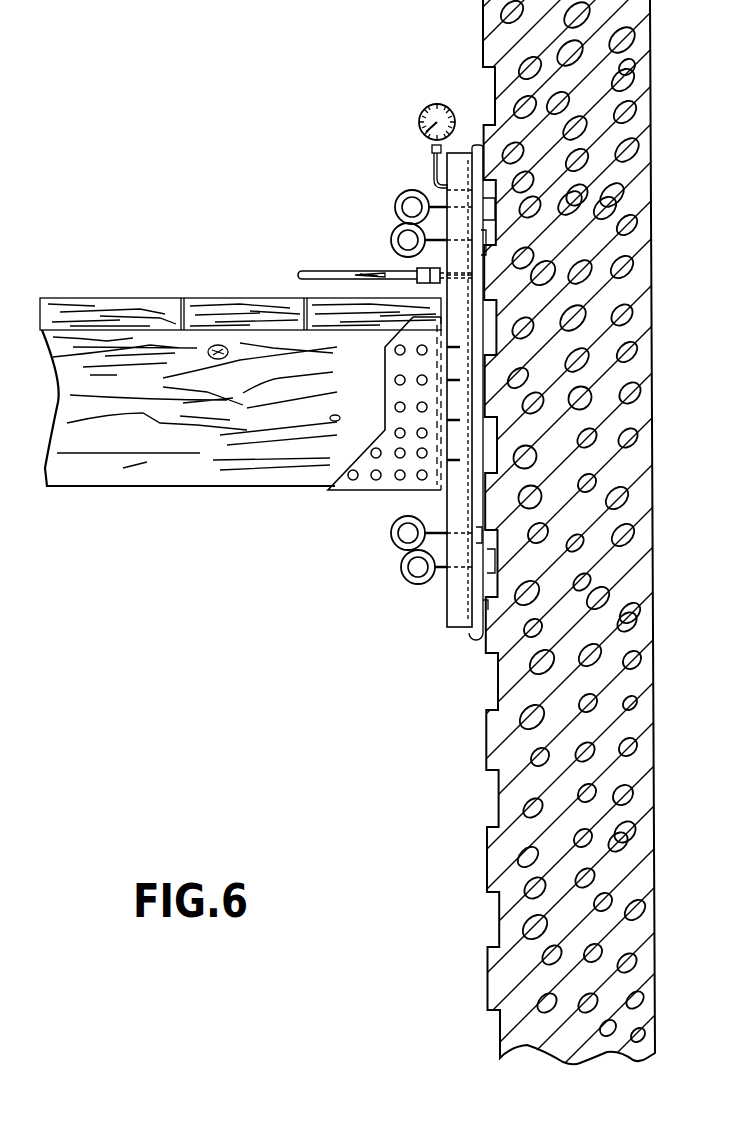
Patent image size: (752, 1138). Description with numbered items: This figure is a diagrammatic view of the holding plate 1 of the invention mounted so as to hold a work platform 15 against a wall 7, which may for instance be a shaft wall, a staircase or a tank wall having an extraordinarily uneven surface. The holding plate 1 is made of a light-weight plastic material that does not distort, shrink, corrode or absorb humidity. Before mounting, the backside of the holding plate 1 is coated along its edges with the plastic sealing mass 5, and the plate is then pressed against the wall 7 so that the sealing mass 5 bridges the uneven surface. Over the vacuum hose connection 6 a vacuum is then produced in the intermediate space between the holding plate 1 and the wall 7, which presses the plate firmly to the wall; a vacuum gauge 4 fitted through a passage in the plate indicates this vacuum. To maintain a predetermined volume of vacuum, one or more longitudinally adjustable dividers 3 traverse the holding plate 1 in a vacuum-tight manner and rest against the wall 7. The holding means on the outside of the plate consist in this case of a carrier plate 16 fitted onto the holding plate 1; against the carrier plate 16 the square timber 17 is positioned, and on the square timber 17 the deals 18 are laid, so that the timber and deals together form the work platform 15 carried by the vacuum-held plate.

The holding plate 1 is at (449, 626).
The longitudinally adjustable divider 3 is at (414, 570).
The vacuum gauge 4 is at (430, 104).
The plastic sealing mass 5 is at (474, 640).
The vacuum hose connection 6 is at (365, 270).
The wall 7 is at (650, 56).
The work platform 15 is at (102, 278).
The carrier plate 16 is at (368, 478).
The square timber 17 is at (97, 468).
The deals 18 is at (233, 305).